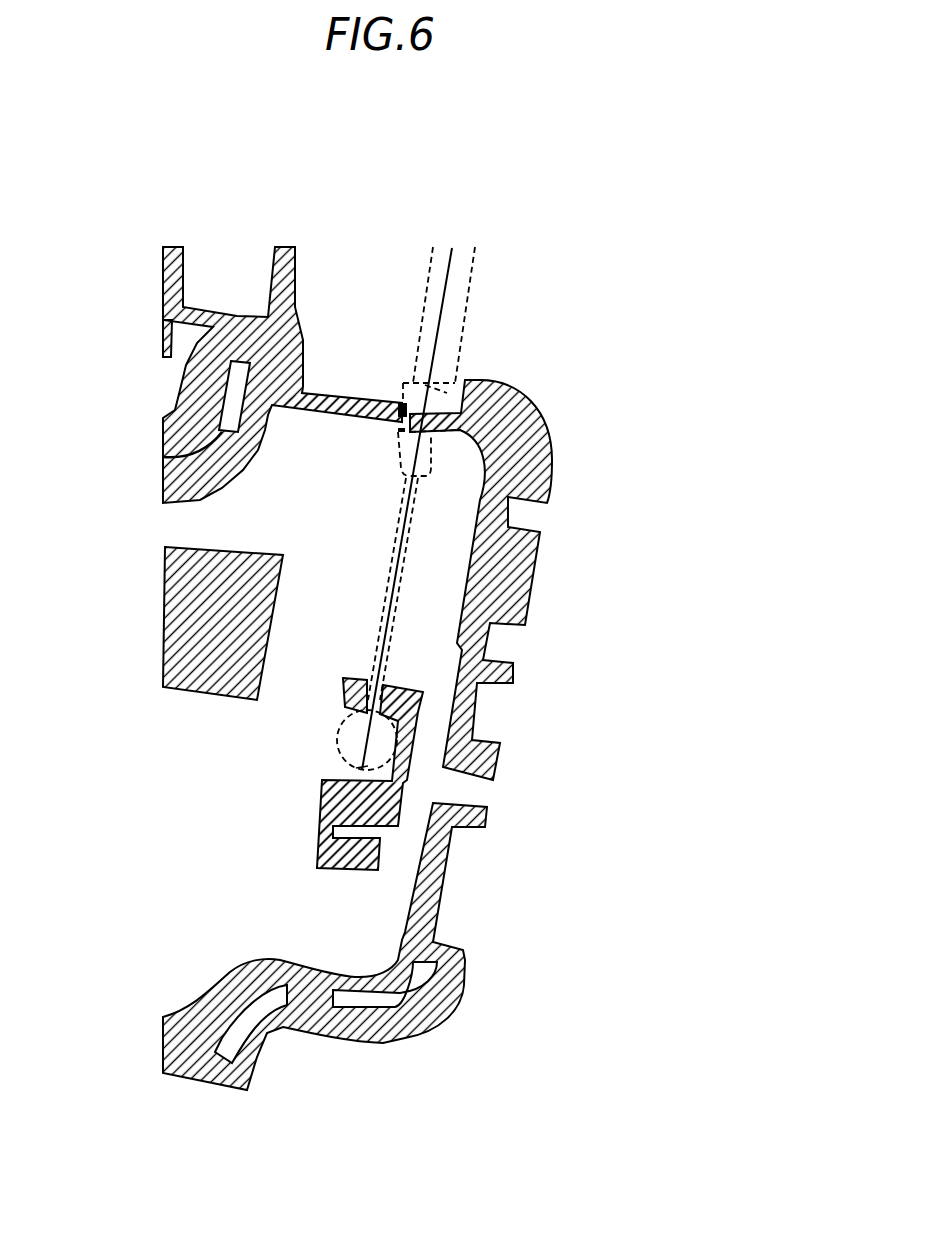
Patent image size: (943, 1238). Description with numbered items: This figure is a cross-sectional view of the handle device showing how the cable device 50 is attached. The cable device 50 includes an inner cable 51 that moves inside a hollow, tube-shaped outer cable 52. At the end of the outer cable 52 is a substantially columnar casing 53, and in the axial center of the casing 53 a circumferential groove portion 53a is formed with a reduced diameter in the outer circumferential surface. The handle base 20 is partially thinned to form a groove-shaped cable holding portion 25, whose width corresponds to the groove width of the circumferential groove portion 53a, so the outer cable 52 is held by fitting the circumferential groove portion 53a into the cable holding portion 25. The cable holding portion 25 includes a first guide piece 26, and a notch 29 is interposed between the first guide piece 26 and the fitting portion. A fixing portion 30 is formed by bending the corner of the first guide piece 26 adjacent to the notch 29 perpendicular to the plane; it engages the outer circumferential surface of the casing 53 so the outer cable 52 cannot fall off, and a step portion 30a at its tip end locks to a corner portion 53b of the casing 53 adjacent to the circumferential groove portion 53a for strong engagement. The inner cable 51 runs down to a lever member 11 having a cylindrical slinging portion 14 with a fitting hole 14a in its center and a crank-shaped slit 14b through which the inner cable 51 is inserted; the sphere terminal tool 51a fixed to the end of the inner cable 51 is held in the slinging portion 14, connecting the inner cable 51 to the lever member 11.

The lever member 11 is at (377, 857).
The slinging portion 14 is at (395, 774).
The fitting hole 14a is at (377, 783).
The slit 14b is at (420, 693).
The handle base 20 is at (532, 415).
The cable holding portion 25 is at (331, 380).
The first guide piece 26 is at (349, 404).
The notch 29 is at (400, 430).
The fixing portion 30 is at (400, 425).
The step portion 30a is at (403, 410).
The cable device 50 is at (490, 254).
The inner cable 51 is at (403, 572).
The sphere terminal tool for locking 51a is at (338, 726).
The outer cable 52 is at (467, 310).
The casing 53 is at (440, 462).
The circumferential groove portion 53a is at (400, 428).
The corner portion 53b is at (440, 390).